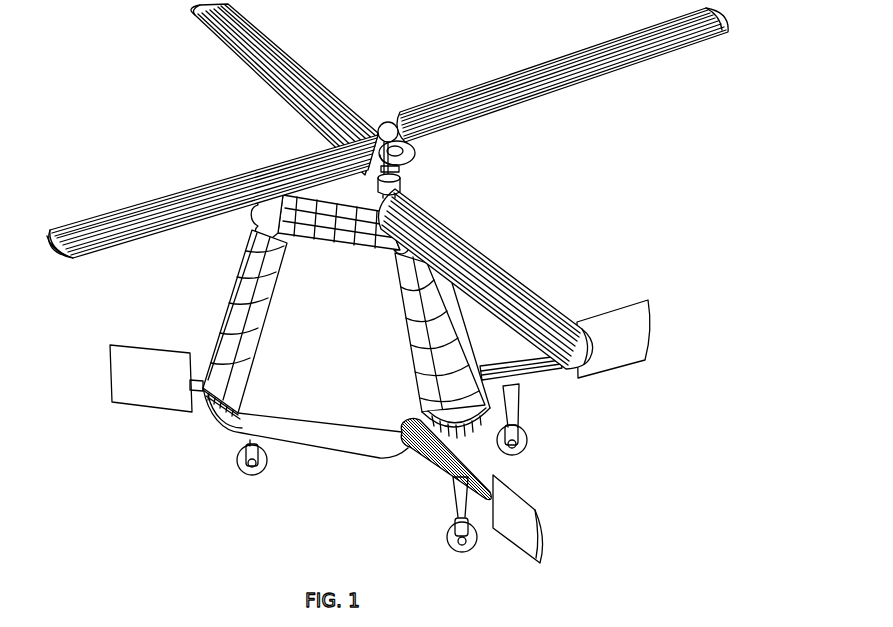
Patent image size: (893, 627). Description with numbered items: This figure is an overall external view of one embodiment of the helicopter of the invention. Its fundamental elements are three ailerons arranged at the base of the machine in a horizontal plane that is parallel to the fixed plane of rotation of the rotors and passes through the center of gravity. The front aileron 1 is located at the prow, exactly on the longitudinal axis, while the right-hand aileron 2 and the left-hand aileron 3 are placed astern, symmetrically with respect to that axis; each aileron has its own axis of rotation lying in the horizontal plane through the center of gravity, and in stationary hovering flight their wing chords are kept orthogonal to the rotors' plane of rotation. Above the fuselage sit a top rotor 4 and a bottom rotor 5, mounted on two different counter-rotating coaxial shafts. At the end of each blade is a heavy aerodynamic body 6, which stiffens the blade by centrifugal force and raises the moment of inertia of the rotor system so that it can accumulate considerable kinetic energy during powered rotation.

The front aileron 1 is at (148, 403).
The right-hand aileron 2 is at (627, 363).
The left-hand aileron 3 is at (523, 495).
The top rotor 4 is at (381, 115).
The bottom rotor 5 is at (405, 183).
The heavy aerodynamic body 6 is at (190, 13).